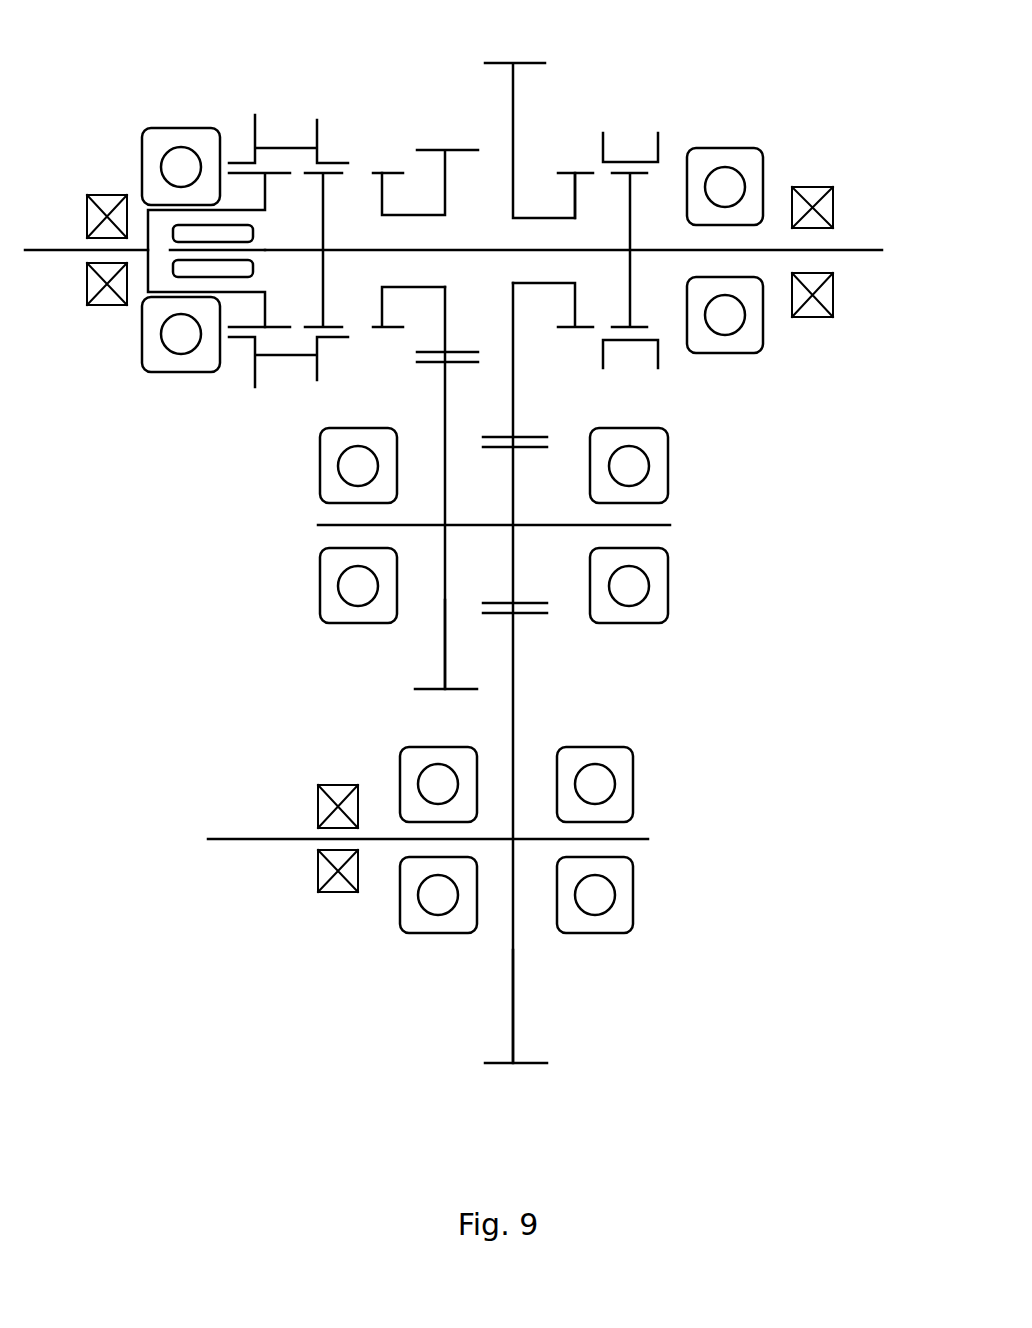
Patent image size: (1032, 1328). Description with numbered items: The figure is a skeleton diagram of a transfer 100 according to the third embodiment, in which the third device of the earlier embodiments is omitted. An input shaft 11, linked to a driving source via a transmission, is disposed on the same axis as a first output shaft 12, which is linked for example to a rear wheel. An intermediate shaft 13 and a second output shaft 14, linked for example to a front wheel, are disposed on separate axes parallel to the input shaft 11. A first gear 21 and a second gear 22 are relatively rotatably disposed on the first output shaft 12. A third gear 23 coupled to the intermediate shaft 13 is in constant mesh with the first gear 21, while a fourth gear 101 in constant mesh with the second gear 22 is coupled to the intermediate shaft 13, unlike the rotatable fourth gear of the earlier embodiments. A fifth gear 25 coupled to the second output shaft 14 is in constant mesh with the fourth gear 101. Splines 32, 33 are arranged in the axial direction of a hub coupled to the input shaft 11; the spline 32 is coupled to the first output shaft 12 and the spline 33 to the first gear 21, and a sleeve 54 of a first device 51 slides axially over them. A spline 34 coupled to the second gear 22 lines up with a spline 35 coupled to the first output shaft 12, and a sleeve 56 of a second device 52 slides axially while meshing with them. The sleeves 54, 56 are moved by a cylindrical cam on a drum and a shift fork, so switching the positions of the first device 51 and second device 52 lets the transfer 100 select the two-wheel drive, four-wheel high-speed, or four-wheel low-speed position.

The transfer 100 is at (846, 118).
The input shaft 11 is at (55, 252).
The first output shaft 12 is at (862, 253).
The intermediate shaft 13 is at (330, 527).
The second output shaft 14 is at (248, 841).
The first gear 21 is at (428, 150).
The second gear 22 is at (530, 63).
The third gear 23 is at (431, 690).
The fifth gear 25 is at (528, 1065).
The fourth gear 101 is at (530, 606).
The spline 32 is at (330, 172).
The spline 33 is at (390, 328).
The spline 34 is at (570, 173).
The spline 35 is at (633, 328).
The first device 51 is at (290, 112).
The second device 52 is at (660, 113).
The sleeve 54 is at (253, 127).
The sleeve 56 is at (661, 135).